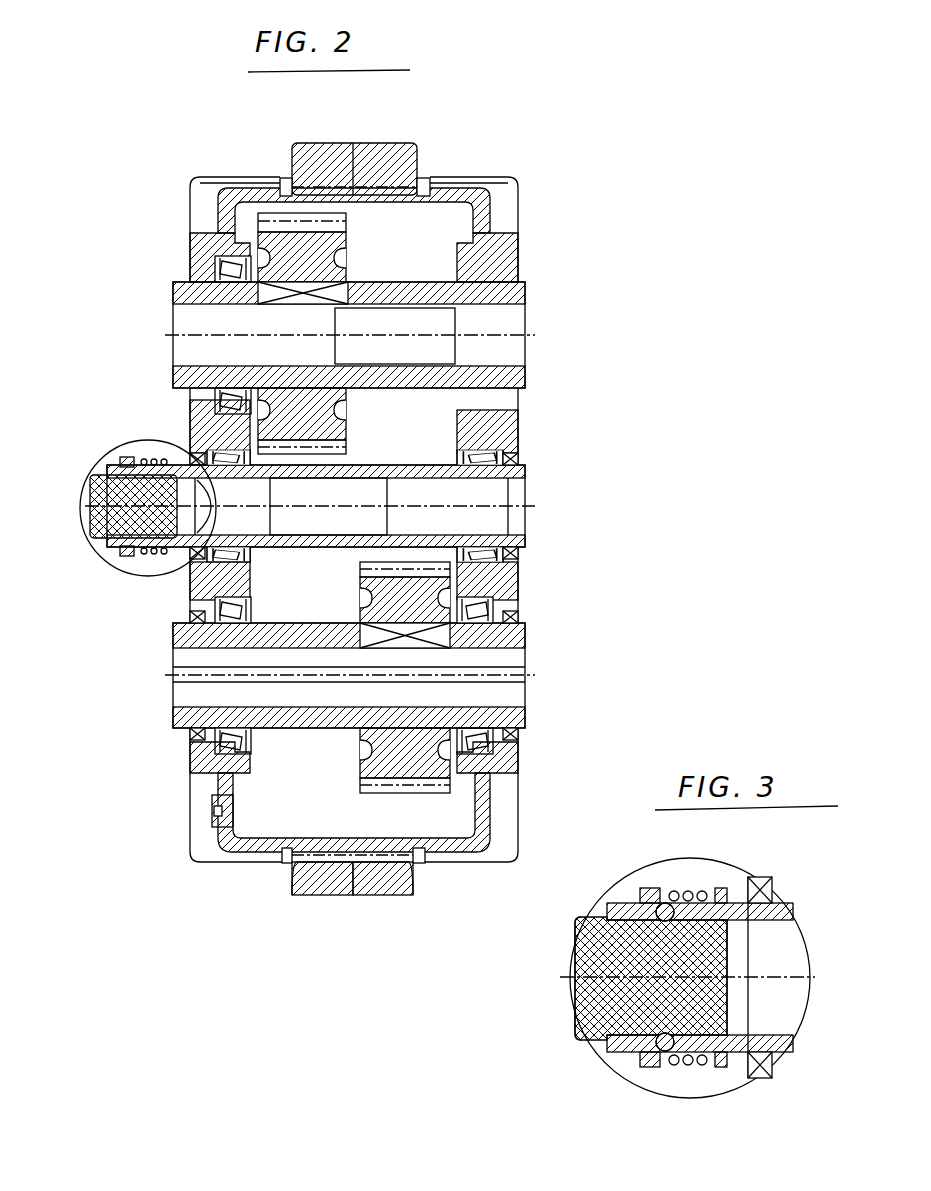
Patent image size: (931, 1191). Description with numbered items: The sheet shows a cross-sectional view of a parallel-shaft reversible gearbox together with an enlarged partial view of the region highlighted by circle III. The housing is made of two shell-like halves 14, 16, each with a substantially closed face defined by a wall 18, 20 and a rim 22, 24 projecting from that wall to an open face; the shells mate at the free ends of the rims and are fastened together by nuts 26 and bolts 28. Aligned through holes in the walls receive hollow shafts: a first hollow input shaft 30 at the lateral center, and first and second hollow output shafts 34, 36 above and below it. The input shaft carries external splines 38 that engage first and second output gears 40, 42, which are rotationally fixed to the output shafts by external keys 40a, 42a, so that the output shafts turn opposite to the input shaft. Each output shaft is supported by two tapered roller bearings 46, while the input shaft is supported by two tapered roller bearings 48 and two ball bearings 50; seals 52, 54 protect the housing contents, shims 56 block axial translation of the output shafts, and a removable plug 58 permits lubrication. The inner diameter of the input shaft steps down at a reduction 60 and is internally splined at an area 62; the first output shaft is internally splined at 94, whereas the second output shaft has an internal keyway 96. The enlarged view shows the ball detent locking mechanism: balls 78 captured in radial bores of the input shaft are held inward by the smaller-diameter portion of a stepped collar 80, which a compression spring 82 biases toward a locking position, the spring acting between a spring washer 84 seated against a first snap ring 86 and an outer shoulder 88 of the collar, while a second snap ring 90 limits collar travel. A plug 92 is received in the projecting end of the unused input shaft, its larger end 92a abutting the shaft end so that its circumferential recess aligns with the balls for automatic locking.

In FIG. 2, the first housing shell 14 is at (338, 892).
In FIG. 2, the second housing shell 16 is at (381, 892).
In FIG. 2, the wall of first housing shell 18 is at (190, 605).
In FIG. 2, the wall of second housing shell 20 is at (505, 441).
In FIG. 2, the rim of first housing shell 22 is at (250, 850).
In FIG. 2, the rim of second housing shell 24 is at (460, 852).
In FIG. 2, the nuts 26 is at (423, 868).
In FIG. 2, the bolts 28 is at (283, 864).
In FIG. 2, the first hollow input shaft 30 is at (520, 550).
In FIG. 2, the first hollow output shaft 34 is at (515, 285).
In FIG. 2, the second hollow output shaft 36 is at (450, 617).
In FIG. 2, the external splines 38 is at (335, 572).
In FIG. 2, the first output gear 40 is at (278, 270).
In FIG. 2, the external key of first output gear 40a is at (257, 267).
In FIG. 2, the second output gear 42 is at (455, 596).
In FIG. 2, the external key of second output gear 42a is at (373, 622).
In FIG. 2, the tapered roller bearings 46 is at (190, 758).
In FIG. 2, the tapered roller bearings 48 is at (210, 440).
In FIG. 2, the ball bearings 50 is at (186, 592).
In FIG. 2, the seal 52 is at (190, 452).
In FIG. 2, the seal 54 is at (215, 275).
In FIG. 2, the shims 56 is at (242, 388).
In FIG. 2, the removable plug 58 is at (238, 810).
In FIG. 3, the inner diameter reduction 60 is at (742, 1017).
In FIG. 2, the internally splined area 62 is at (367, 534).
In FIG. 3, the balls 78 is at (637, 897).
In FIG. 3, the stepped collar 80 is at (660, 890).
In FIG. 3, the compression spring 82 is at (685, 893).
In FIG. 3, the spring washer 84 is at (727, 1070).
In FIG. 3, the first snap ring 86 is at (742, 890).
In FIG. 3, the outer shoulder of collar 88 is at (655, 1065).
In FIG. 3, the second snap ring 90 is at (642, 1060).
In FIG. 3, the plug 92 is at (576, 1028).
In FIG. 3, the larger end of plug 92a is at (577, 1003).
In FIG. 2, the internal splines of first output shaft 94 is at (433, 365).
In FIG. 2, the internal keyway 96 is at (525, 673).
In FIG. 2, the circle III is at (100, 556).